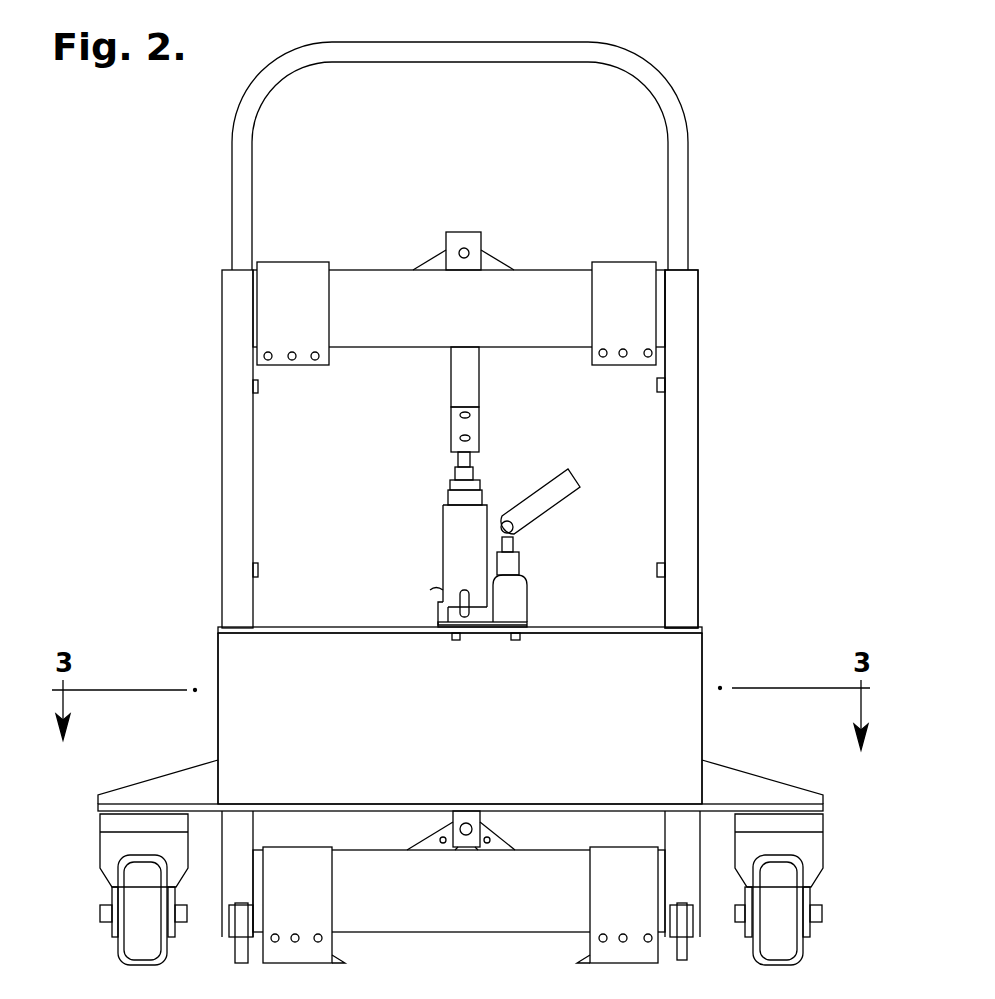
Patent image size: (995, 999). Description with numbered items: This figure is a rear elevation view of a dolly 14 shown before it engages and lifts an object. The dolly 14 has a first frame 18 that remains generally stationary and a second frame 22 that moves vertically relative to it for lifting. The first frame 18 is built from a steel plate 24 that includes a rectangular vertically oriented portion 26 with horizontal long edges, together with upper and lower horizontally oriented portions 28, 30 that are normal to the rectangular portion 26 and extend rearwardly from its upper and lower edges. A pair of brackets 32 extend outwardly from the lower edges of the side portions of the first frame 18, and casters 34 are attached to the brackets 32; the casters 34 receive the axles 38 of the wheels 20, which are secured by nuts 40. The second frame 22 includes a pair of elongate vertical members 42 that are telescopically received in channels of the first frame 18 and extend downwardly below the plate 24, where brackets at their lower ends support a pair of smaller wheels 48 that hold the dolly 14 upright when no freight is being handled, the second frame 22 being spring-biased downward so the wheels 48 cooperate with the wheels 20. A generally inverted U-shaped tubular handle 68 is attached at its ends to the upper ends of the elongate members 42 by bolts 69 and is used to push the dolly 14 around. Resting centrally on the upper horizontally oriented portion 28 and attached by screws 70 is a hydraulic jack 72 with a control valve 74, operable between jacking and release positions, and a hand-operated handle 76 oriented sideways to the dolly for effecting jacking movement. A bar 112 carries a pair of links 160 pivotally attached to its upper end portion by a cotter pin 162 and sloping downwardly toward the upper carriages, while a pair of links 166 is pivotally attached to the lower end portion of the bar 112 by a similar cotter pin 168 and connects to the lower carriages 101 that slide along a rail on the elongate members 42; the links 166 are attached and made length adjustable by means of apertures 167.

The tubular handle 68 is at (578, 43).
The dolly 14 is at (722, 298).
The elongate vertical members 42 is at (222, 530).
The second frame 22 is at (687, 433).
The bolts 69 is at (258, 388).
The cotter pin 162 is at (468, 232).
The links 160 is at (430, 260).
The bar 112 is at (451, 383).
The control valve 74 is at (440, 593).
The hydraulic jack 72 is at (527, 592).
The hand-operated handle 76 is at (548, 478).
The screws 70 is at (455, 640).
The upper horizontally oriented portion 28 is at (565, 627).
The first frame 18 is at (692, 647).
The plate 24 is at (238, 652).
The rectangular vertically oriented portion 26 is at (692, 722).
The lower horizontally oriented portion 30 is at (540, 803).
The brackets 32 is at (183, 777).
The casters 34 is at (107, 848).
The nuts 40 is at (205, 897).
The axles 38 is at (117, 913).
The wheels 20 is at (153, 947).
The wheels 48 is at (235, 960).
The carriages 101 is at (313, 893).
The cotter pin 168 is at (466, 822).
The apertures 167 is at (437, 830).
The links 166 is at (443, 834).